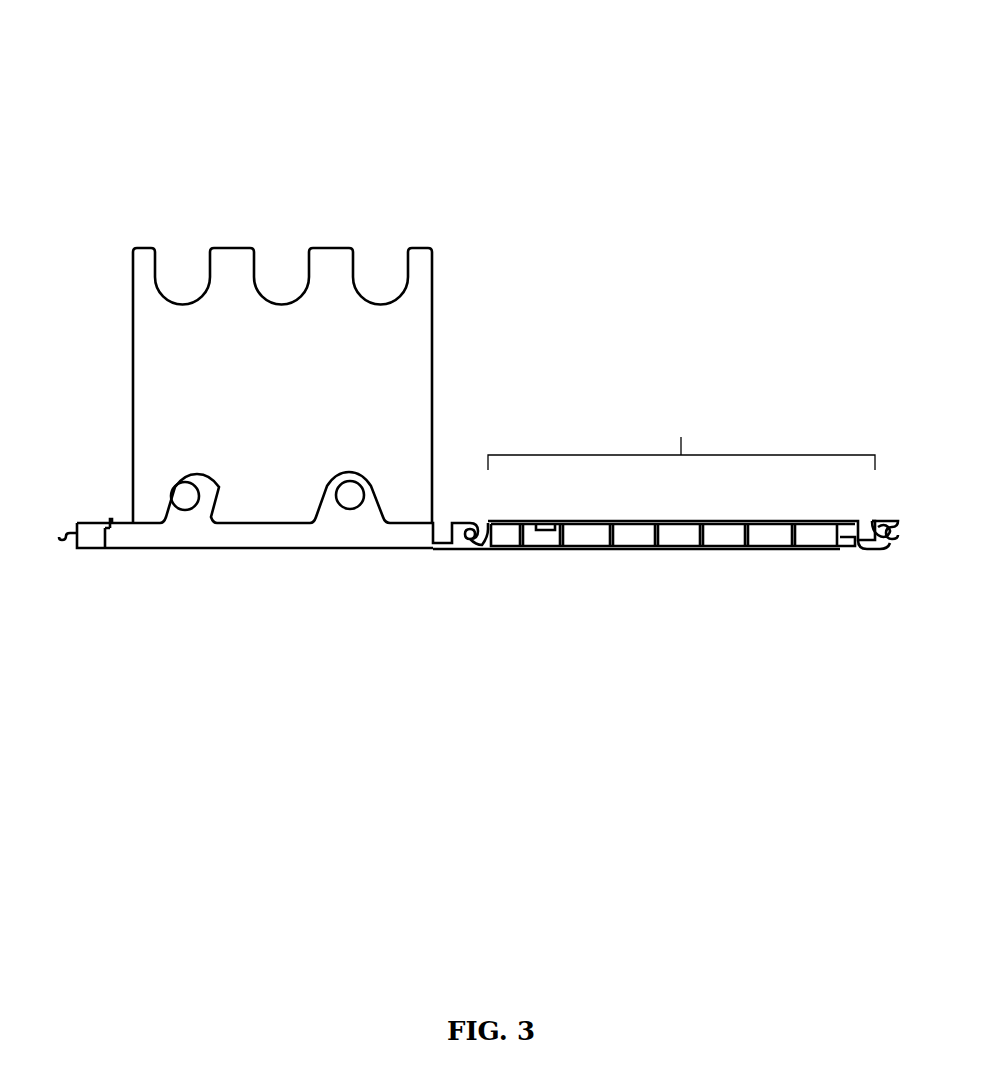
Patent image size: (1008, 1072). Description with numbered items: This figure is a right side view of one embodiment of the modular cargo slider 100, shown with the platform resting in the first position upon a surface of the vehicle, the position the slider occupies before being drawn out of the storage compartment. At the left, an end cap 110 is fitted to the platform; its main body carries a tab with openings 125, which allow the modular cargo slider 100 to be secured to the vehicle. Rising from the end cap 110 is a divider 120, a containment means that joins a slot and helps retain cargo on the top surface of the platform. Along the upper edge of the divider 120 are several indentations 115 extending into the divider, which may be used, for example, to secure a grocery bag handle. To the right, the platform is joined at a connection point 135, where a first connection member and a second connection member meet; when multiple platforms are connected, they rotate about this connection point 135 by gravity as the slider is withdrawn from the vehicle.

The modular cargo slider 100 is at (648, 74).
The end cap 110 is at (279, 549).
The indentation 115 is at (227, 361).
The divider 120 is at (227, 361).
The opening 125 is at (329, 539).
The connection point 135 is at (665, 491).